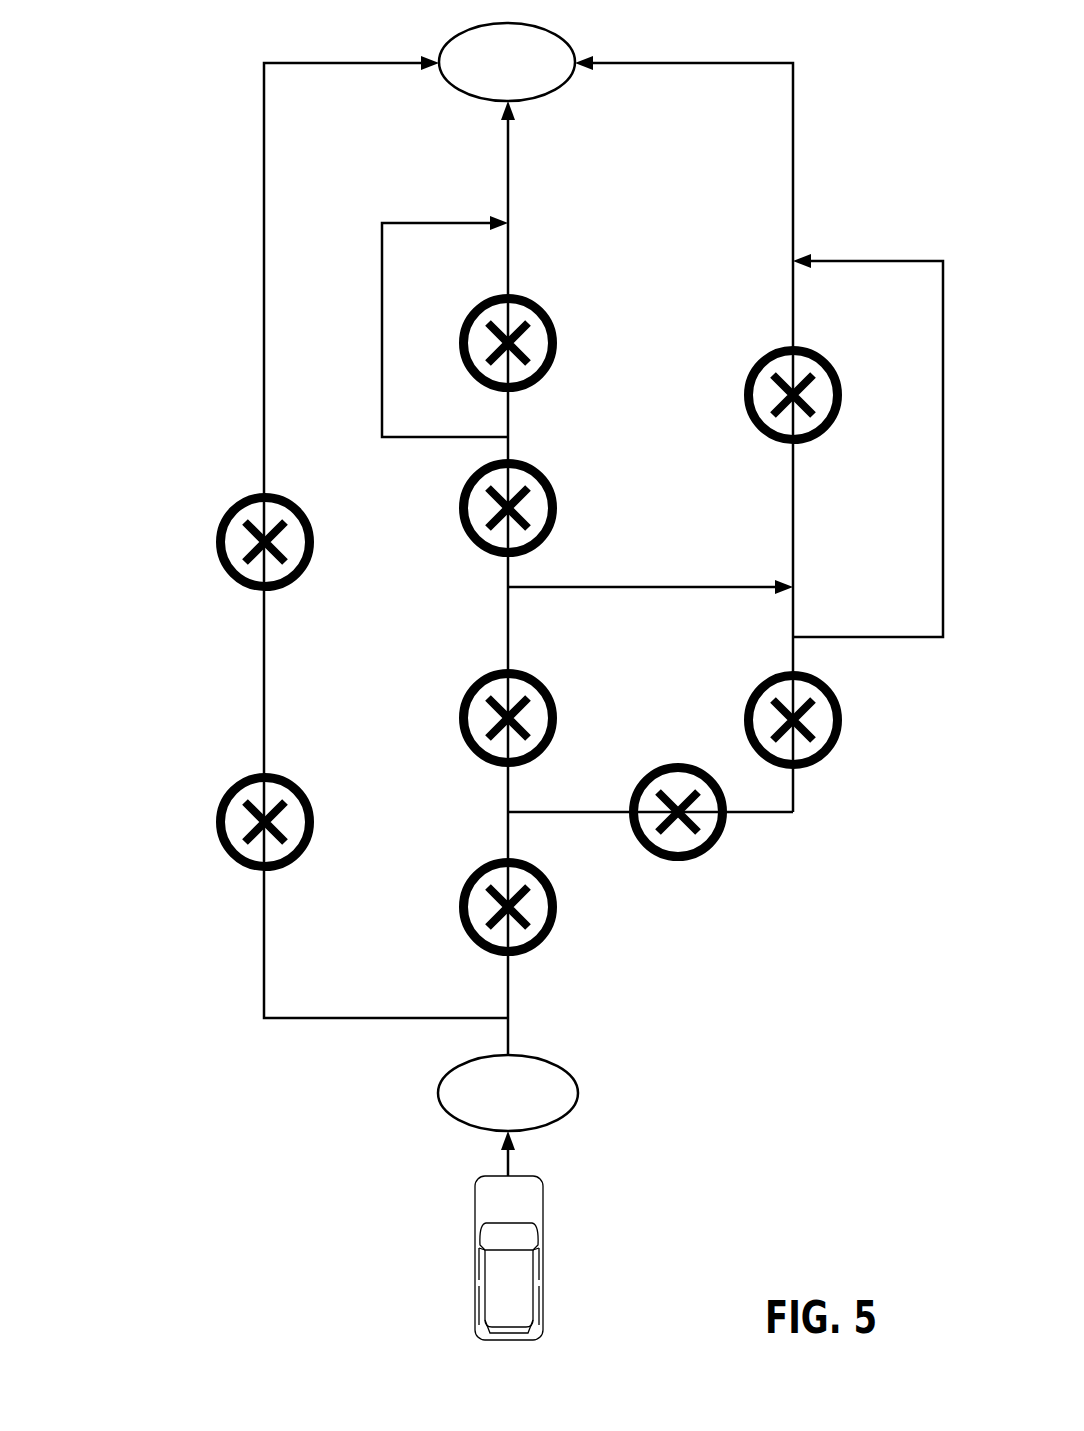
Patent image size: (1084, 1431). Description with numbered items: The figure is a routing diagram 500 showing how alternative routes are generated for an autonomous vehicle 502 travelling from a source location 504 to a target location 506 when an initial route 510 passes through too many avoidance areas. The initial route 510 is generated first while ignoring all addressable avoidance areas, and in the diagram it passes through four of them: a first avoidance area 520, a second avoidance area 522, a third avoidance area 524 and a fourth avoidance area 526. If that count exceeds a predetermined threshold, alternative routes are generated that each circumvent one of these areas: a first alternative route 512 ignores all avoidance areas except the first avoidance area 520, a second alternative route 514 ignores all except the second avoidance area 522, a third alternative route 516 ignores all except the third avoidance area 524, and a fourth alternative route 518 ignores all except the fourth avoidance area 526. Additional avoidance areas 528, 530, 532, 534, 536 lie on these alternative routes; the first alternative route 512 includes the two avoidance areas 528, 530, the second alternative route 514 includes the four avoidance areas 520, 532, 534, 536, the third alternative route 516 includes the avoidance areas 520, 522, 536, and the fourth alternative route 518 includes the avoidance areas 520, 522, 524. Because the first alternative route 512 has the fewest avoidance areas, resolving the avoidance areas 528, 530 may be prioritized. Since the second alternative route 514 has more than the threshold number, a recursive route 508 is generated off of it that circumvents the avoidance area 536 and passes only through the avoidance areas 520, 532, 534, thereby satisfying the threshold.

The routing diagram 500 is at (148, 55).
The autonomous vehicle 502 is at (545, 1206).
The source location 504 is at (556, 1064).
The target location 506 is at (537, 27).
The recursive route 508 is at (808, 636).
The initial route 510 is at (511, 270).
The first alternative route 512 is at (505, 1017).
The second alternative route 514 is at (514, 811).
The third alternative route 516 is at (515, 586).
The fourth alternative route 518 is at (504, 436).
The first avoidance area 520 is at (471, 872).
The second avoidance area 522 is at (471, 688).
The third avoidance area 524 is at (553, 485).
The fourth avoidance area 526 is at (555, 336).
The avoidance area 528 is at (222, 803).
The avoidance area 530 is at (229, 510).
The avoidance area 532 is at (716, 845).
The avoidance area 534 is at (834, 694).
The avoidance area 536 is at (832, 366).